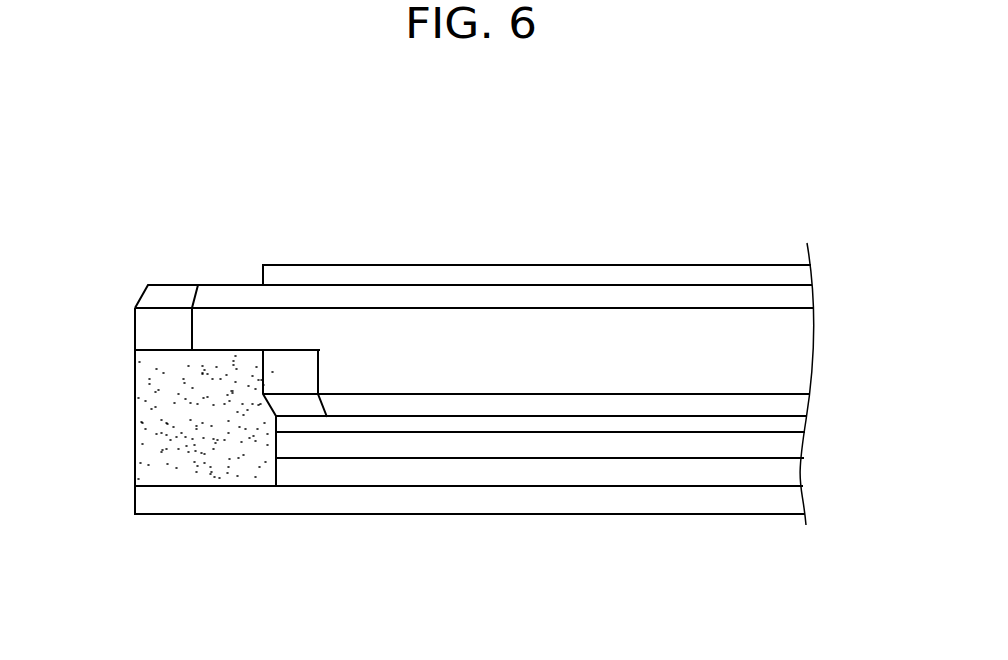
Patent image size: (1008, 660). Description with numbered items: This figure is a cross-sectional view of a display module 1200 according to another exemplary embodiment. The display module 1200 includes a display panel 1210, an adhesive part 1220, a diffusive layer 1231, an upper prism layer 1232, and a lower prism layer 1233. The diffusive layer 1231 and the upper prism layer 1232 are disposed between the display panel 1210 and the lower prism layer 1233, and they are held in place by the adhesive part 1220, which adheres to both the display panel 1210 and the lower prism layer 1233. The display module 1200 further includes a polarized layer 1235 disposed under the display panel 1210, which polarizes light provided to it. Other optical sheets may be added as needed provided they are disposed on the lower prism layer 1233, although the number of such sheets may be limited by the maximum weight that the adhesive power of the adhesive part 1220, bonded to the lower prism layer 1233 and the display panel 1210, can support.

The display module 1200 is at (306, 206).
The display panel 1210 is at (138, 328).
The adhesive part 1220 is at (138, 438).
The diffusive layer 1231 is at (375, 448).
The upper prism layer 1232 is at (452, 473).
The lower prism layer 1233 is at (550, 502).
The polarized layer 1235 is at (680, 425).